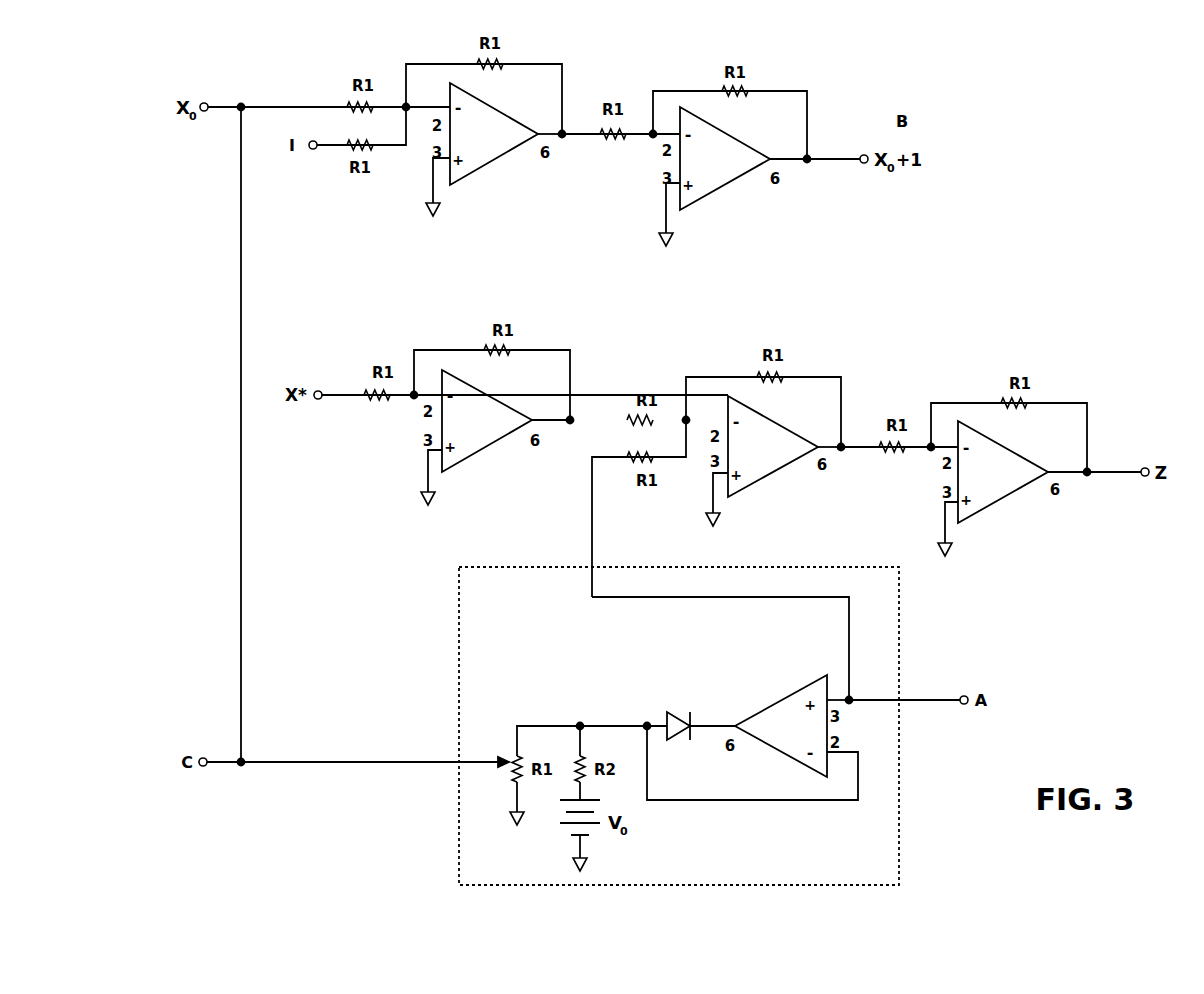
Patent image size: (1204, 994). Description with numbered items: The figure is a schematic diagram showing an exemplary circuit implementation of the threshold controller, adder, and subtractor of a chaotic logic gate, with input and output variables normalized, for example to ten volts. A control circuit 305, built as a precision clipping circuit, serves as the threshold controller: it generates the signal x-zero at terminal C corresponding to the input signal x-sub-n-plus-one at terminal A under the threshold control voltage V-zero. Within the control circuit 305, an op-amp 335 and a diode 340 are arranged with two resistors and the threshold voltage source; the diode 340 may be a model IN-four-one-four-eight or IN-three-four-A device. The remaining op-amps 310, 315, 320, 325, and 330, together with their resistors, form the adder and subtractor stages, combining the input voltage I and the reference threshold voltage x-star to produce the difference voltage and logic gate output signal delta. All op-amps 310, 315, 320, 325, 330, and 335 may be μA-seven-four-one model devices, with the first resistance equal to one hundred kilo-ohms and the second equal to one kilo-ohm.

The control circuit 305 is at (459, 646).
The op-amp 310 is at (494, 134).
The op-amp 315 is at (725, 158).
The op-amp 320 is at (487, 421).
The op-amp 325 is at (773, 446).
The op-amp 330 is at (1003, 472).
The op-amp 335 is at (781, 726).
The diode 340 is at (667, 712).